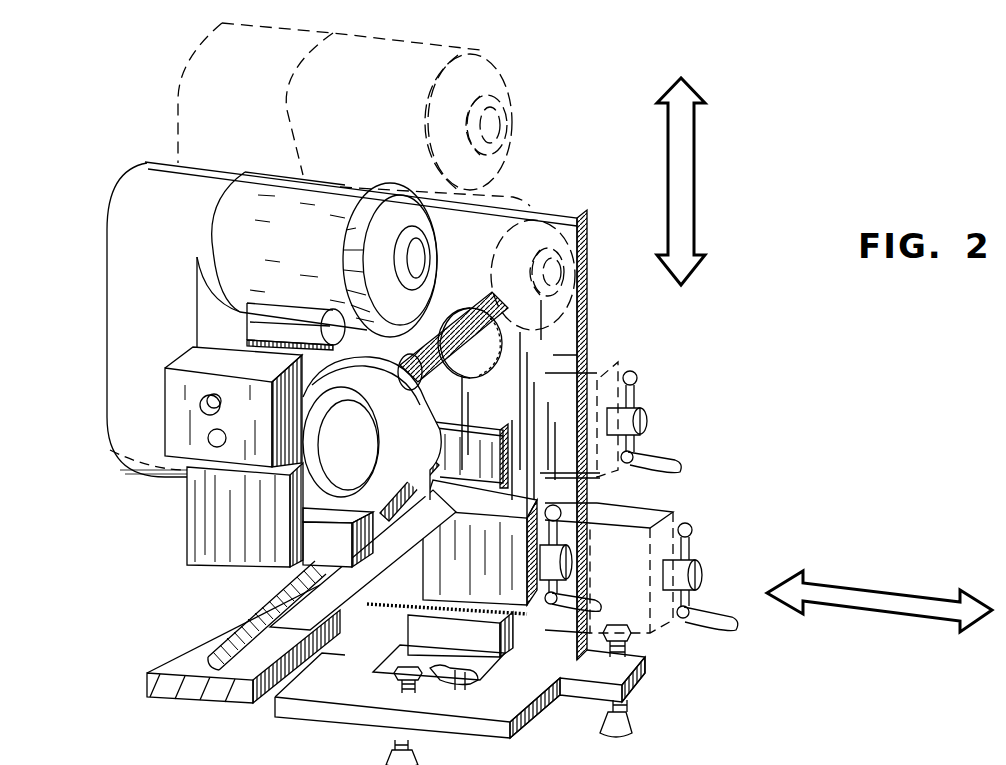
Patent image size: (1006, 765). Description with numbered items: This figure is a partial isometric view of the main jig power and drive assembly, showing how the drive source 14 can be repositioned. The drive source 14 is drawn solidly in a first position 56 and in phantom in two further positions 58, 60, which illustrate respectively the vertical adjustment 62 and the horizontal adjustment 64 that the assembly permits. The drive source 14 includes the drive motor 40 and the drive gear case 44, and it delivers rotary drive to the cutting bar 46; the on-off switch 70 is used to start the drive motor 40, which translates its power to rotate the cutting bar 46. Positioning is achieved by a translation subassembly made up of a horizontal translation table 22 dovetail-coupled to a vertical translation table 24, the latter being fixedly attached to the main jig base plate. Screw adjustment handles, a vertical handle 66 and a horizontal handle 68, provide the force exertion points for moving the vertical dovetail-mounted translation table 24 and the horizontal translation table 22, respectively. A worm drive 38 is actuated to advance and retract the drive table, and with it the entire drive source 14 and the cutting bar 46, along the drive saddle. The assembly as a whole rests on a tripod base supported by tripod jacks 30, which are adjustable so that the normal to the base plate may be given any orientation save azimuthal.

The drive source 14 is at (160, 77).
The horizontal translation table 22 is at (600, 357).
The vertical translation table 24 is at (460, 646).
The tripod jack 30 is at (624, 700).
The worm drive 38 is at (255, 617).
The drive motor 40 is at (290, 255).
The drive gear case 44 is at (340, 459).
The cutting bar 46 is at (453, 341).
The first position 56 is at (107, 360).
The phantom position 58 is at (520, 130).
The phantom position 60 is at (590, 318).
The vertical adjustment 62 is at (695, 177).
The horizontal adjustment 64 is at (902, 592).
The vertical screw adjustment handle 66 is at (472, 680).
The horizontal screw adjustment handle 68 is at (672, 453).
The on-off switch 70 is at (185, 410).